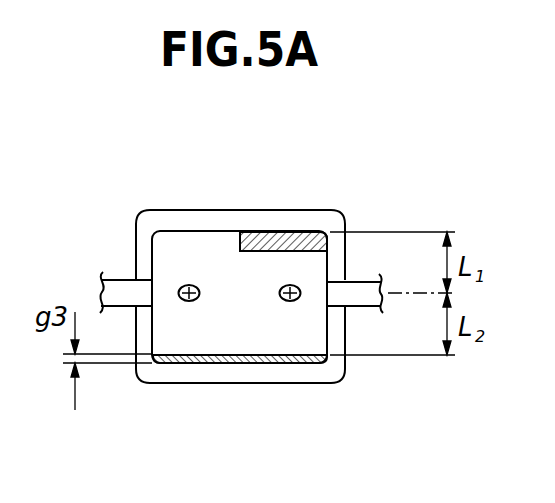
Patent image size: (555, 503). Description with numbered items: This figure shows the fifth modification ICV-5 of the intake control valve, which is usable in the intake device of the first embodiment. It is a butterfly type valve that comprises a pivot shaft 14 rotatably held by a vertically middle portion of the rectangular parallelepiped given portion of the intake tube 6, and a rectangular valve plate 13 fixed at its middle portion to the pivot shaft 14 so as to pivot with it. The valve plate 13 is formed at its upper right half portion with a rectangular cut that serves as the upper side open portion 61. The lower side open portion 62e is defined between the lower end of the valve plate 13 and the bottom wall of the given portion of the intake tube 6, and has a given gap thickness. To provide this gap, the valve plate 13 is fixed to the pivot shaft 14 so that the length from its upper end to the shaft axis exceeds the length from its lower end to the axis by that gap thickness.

The fifth modification of the intake control valve ICV-5 is at (330, 202).
The intake tube 6 is at (163, 216).
The valve plate 13 is at (215, 233).
The upper side open portion 61 is at (277, 232).
The lower side open portion 62e is at (183, 365).
The pivot shaft 14 is at (123, 286).